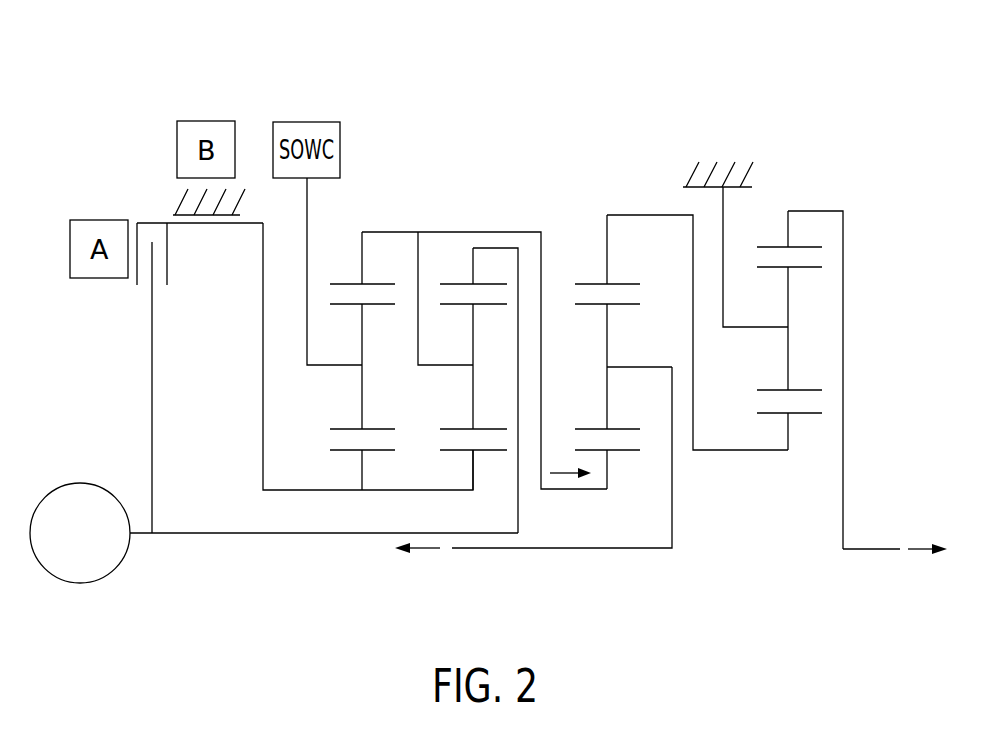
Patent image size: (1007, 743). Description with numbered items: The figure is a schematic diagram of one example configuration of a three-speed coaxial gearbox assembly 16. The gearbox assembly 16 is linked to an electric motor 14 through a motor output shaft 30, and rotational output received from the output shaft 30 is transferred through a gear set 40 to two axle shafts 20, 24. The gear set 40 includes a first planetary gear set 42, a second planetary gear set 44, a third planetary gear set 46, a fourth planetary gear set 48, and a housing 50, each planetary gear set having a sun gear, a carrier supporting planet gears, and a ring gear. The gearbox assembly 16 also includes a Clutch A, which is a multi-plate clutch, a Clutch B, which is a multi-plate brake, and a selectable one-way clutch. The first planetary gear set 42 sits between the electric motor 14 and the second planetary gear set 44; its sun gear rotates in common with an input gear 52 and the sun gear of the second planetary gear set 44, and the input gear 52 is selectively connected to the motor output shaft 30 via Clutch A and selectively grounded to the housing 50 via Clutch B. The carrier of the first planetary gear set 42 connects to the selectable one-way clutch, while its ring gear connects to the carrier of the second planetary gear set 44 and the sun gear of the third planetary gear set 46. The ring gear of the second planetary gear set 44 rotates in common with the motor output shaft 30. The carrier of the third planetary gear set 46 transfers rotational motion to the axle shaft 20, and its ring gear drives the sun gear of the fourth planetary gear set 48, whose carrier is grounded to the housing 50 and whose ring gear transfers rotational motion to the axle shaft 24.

The electric motor 14 is at (78, 485).
The gearbox assembly 16 is at (810, 280).
The axle shaft 20 is at (562, 549).
The axle shaft 24 is at (866, 550).
The motor output shaft 30 is at (135, 536).
The gear set 40 is at (559, 272).
The first planetary gear set 42 is at (382, 199).
The second planetary gear set 44 is at (505, 199).
The third planetary gear set 46 is at (652, 201).
The fourth planetary gear set 48 is at (813, 201).
The housing 50 is at (245, 210).
The input gear 52 is at (263, 312).